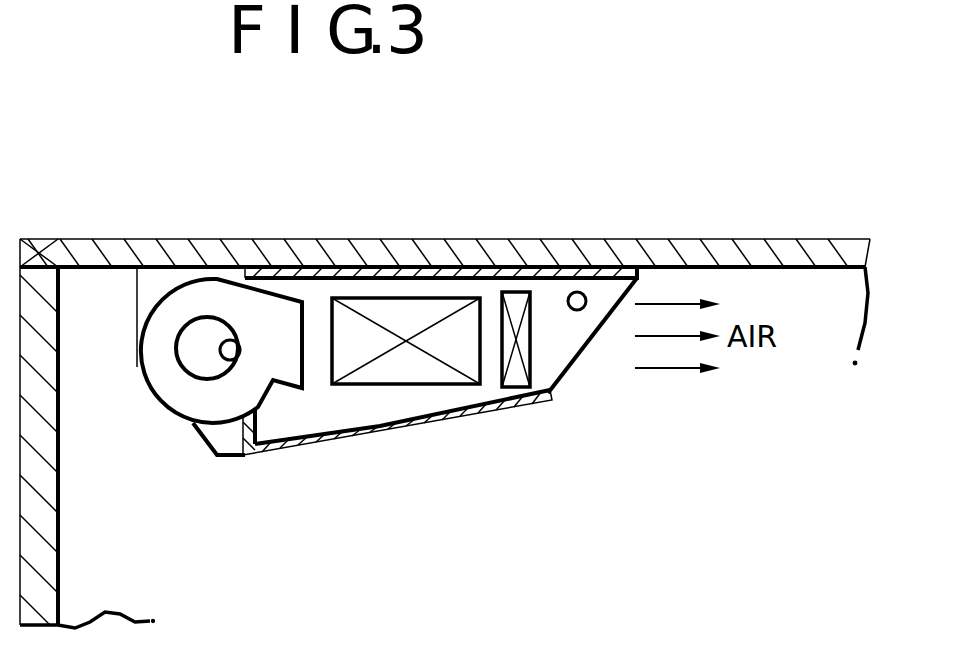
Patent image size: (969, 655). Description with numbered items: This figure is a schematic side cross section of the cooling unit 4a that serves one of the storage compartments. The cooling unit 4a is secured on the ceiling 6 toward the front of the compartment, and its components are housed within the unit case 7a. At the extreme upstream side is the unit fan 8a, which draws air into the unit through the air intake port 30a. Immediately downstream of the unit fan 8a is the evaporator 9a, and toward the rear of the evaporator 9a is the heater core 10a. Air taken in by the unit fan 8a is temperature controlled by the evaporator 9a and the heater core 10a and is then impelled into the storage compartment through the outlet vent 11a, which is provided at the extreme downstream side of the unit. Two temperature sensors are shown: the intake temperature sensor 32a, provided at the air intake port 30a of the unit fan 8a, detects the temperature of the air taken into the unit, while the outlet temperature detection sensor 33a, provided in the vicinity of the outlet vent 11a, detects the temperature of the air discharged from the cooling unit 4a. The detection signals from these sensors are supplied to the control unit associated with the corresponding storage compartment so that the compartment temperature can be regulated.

The ceiling 6 is at (760, 247).
The unit fan 8a is at (135, 364).
The air intake port 30a is at (194, 360).
The intake temperature sensor 32a is at (226, 357).
The outlet temperature detection sensor 33a is at (577, 292).
The cooling unit 4a is at (287, 461).
The unit case 7a is at (338, 450).
The evaporator 9a is at (430, 373).
The heater core 10a is at (513, 378).
The outlet vent 11a is at (562, 350).